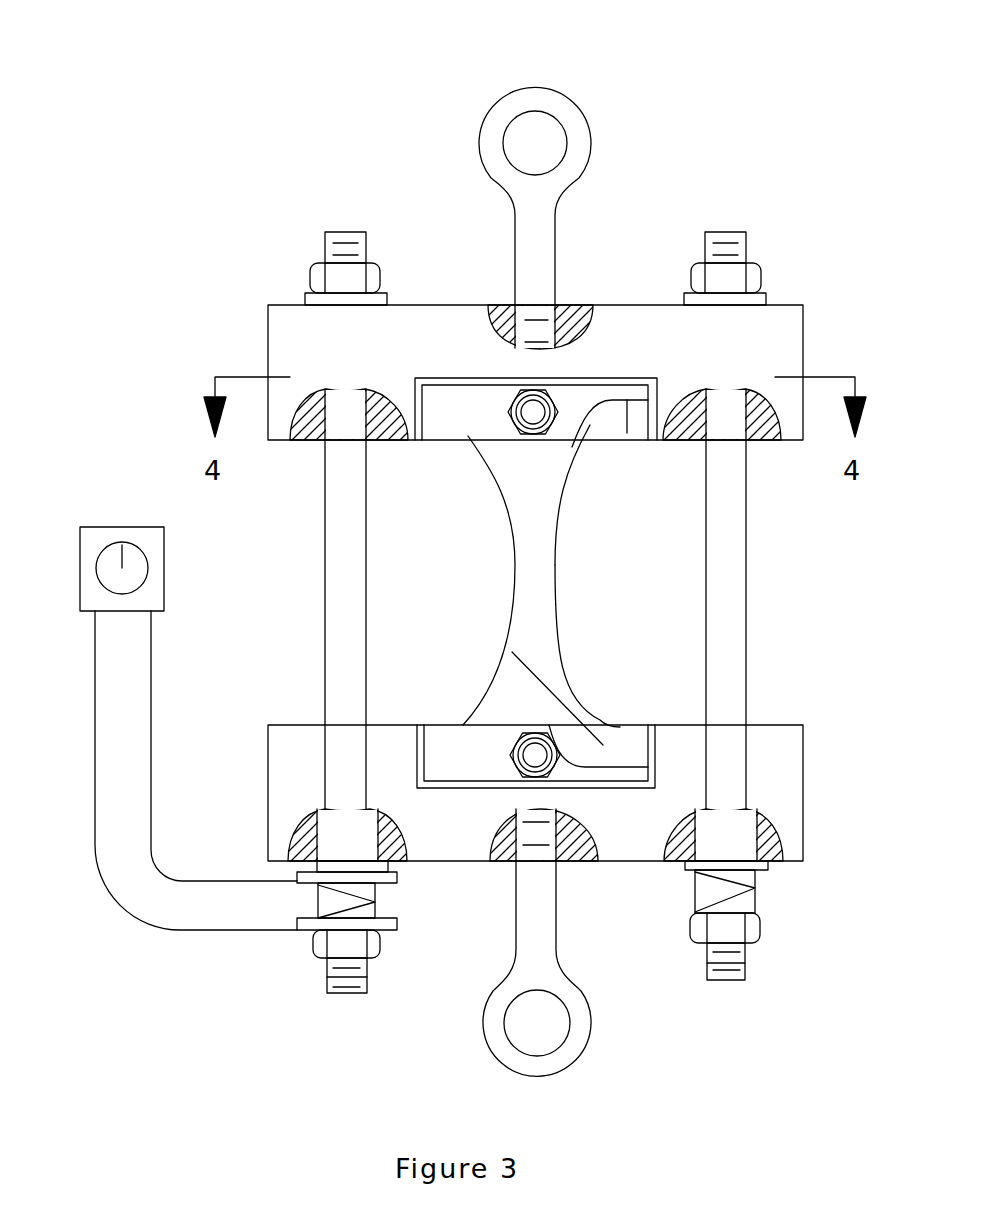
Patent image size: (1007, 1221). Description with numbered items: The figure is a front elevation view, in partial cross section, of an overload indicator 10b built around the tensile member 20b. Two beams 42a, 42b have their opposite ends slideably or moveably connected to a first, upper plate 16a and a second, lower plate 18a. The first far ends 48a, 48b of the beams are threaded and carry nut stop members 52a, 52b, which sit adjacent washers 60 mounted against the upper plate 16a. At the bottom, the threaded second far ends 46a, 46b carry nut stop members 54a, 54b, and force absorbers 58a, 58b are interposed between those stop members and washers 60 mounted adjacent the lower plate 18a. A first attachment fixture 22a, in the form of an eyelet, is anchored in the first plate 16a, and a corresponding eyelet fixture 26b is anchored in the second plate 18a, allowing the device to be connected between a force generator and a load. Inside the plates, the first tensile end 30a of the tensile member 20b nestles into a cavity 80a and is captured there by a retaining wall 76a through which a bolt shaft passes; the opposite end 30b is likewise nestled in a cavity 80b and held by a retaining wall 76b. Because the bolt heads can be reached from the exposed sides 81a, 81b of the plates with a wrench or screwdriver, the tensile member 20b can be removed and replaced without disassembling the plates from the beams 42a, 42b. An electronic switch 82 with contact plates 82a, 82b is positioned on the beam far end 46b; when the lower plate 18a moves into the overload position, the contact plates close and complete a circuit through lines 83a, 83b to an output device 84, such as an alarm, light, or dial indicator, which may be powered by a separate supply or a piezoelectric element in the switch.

The overload indicator 10b is at (712, 58).
The first attachment fixture 22a is at (495, 104).
The lower eye bolt 26b is at (585, 1021).
The first plate 16a is at (800, 327).
The second plate 18a is at (797, 780).
The exposed side 81a is at (795, 363).
The exposed side 81b is at (297, 740).
The beam 42a is at (750, 575).
The beam 42b is at (367, 600).
The first far end 48a is at (726, 232).
The first far end 48b is at (345, 232).
The nut stop member 52a is at (748, 263).
The nut stop member 52b is at (323, 263).
The washer 60 is at (305, 294).
The second far end 46a is at (745, 970).
The second far end 46b is at (360, 975).
The nut stop member 54a is at (757, 935).
The nut stop member 54b is at (380, 942).
The force absorber 58a is at (750, 905).
The force absorber 58b is at (337, 897).
The retaining wall 76a is at (488, 430).
The retaining wall 76b is at (460, 738).
The cavity 80a is at (640, 427).
The cavity 80b is at (651, 740).
The first tensile end 30a is at (588, 428).
The lower blade clamp edge 30b is at (512, 652).
The tensile member 20b is at (557, 578).
The contact plate 82b is at (535, 755).
The contact plate 82a is at (300, 878).
The electronic switch 82 is at (303, 925).
The hydraulic line 83a is at (95, 670).
The hydraulic line 83b is at (151, 670).
The output device 84 is at (110, 527).